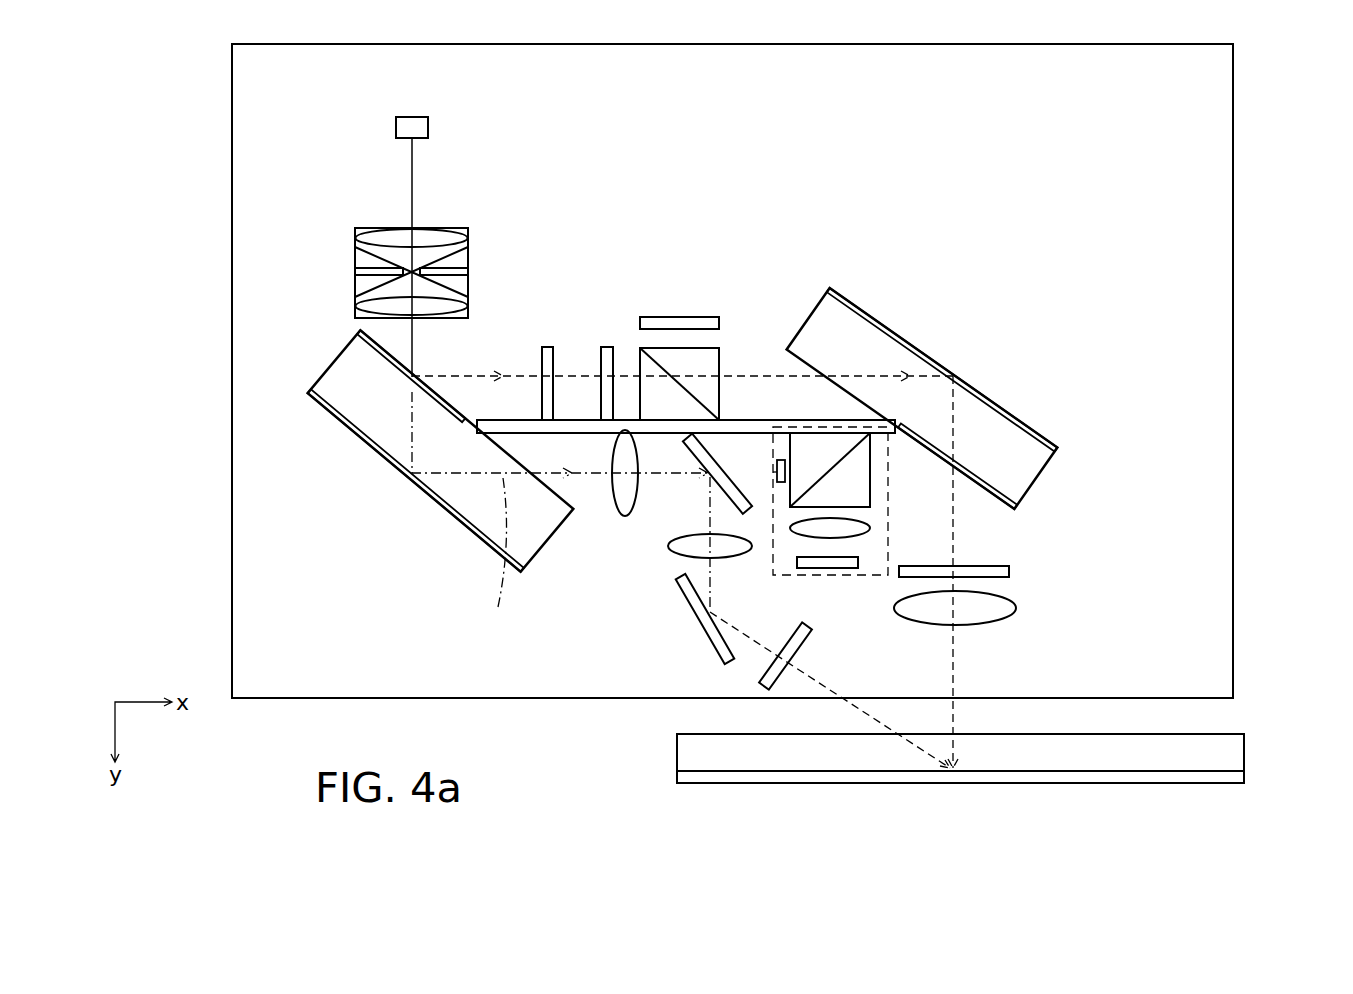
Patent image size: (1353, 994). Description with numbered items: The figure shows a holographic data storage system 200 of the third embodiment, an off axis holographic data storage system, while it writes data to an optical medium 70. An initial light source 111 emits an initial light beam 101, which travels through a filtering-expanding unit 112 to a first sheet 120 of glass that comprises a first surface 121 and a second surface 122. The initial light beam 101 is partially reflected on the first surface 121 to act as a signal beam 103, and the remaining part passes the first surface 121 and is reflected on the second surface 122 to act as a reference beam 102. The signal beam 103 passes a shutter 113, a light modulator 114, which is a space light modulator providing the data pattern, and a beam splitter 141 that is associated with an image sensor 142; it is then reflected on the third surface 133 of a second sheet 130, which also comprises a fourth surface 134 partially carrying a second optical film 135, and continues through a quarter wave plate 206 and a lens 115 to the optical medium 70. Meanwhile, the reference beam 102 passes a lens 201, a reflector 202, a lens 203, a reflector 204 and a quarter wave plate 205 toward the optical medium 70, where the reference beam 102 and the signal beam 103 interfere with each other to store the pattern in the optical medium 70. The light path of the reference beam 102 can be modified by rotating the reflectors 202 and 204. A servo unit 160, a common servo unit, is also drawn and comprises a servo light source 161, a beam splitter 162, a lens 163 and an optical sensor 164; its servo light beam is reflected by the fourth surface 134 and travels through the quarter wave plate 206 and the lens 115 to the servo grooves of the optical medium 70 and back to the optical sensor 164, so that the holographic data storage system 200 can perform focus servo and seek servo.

The holographic data storage system 200 is at (231, 101).
The initial light source 111 is at (412, 113).
The initial light beam 101 is at (412, 182).
The filtering-expanding unit 112 is at (355, 250).
The first sheet 120 is at (551, 545).
The first surface 121 is at (365, 347).
The second surface 122 is at (320, 398).
The reference beam 102 is at (561, 512).
The signal beam 103 is at (523, 376).
The shutter 113 is at (548, 347).
The light modulator 114 is at (607, 347).
The image sensor 142 is at (680, 317).
The beam splitter 141 is at (722, 358).
The lens 201 is at (612, 452).
The reflector 202 is at (723, 497).
The lens 203 is at (668, 546).
The reflector 204 is at (712, 637).
The ¼ wave plate 205 is at (763, 677).
The servo unit 160 is at (878, 577).
The servo light source 161 is at (774, 470).
The beam splitter 162 is at (870, 493).
The lens 163 is at (870, 528).
The optical sensor 164 is at (858, 558).
The second sheet 130 is at (1048, 487).
The third surface 133 is at (1048, 455).
The fourth surface 134 is at (1015, 498).
The second optical film 135 is at (975, 490).
The ¼ wave plate 206 is at (1010, 571).
The lens 115 is at (1016, 608).
The optical medium 70 is at (1244, 771).